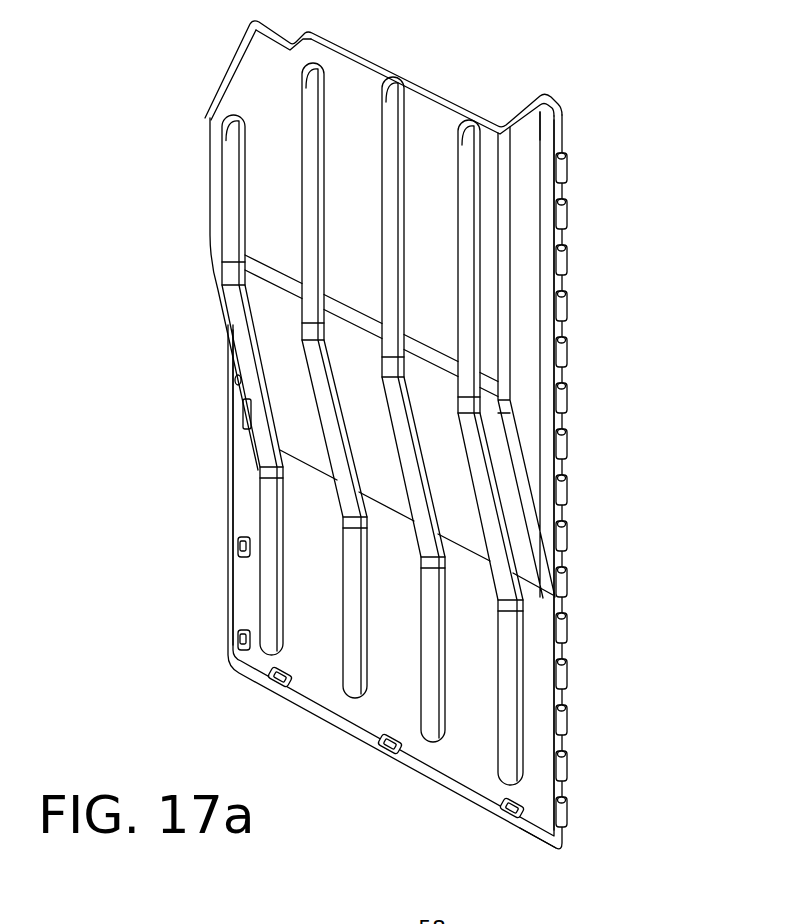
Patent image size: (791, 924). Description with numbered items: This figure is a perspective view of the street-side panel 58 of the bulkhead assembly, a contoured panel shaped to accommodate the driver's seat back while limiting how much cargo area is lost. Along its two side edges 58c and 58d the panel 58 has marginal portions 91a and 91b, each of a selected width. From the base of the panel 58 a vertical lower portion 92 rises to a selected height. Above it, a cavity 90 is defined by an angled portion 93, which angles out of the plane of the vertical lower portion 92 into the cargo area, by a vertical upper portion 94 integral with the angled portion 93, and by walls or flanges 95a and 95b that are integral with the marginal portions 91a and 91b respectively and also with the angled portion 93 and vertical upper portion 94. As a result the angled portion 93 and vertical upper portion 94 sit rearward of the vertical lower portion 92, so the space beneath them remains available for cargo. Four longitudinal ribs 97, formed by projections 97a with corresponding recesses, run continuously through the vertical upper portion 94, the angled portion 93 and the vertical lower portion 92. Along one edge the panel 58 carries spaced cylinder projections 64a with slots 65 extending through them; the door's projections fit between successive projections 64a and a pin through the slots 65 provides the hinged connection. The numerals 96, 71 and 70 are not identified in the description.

The cavity 90 is at (473, 84).
The longitudinal ribs 97 is at (327, 68).
The projections 97a is at (328, 110).
The panel 58 is at (327, 720).
The edge 58c is at (228, 358).
The edge 58d is at (560, 132).
The wall or flange 95a is at (210, 193).
The wall or flange 95b is at (510, 292).
The vertical upper portion 94 is at (343, 212).
The angled portion 93 is at (377, 452).
The fins 96 is at (372, 424).
The marginal portion 91a is at (250, 417).
The marginal portion 91b is at (545, 150).
The slots 65 is at (570, 420).
The cylinder projections 64a is at (570, 717).
The vertical lower portion 92 is at (382, 720).
The bottom tab 71 is at (500, 810).
The bottom corner 70 is at (524, 828).